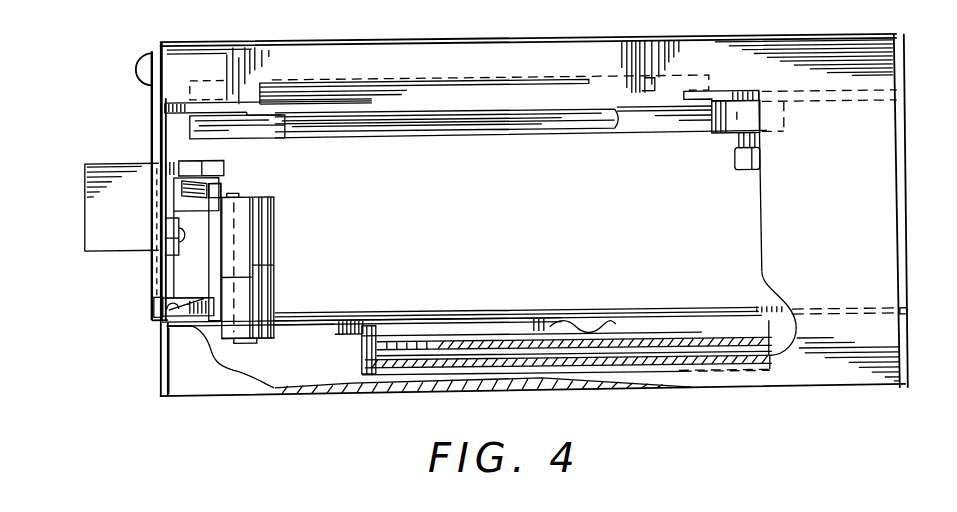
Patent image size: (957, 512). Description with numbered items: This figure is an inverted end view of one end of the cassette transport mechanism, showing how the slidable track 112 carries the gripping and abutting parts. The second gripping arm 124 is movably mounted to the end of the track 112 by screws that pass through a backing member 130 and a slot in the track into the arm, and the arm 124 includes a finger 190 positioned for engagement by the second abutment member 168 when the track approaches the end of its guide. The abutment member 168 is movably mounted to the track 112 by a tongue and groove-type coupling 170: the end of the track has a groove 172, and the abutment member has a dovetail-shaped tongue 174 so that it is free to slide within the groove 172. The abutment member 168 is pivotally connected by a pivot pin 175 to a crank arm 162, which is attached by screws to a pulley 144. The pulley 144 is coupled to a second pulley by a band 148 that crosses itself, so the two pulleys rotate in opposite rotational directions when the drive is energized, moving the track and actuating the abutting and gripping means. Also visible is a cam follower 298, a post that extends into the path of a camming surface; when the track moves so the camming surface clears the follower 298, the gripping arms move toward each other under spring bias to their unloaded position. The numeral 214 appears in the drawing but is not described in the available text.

The slidable track 112 is at (160, 313).
The second gripping arm 124 is at (83, 233).
The backing member 130 is at (160, 258).
The pulley 144 is at (483, 342).
The band 148 is at (362, 366).
The crank arm 162 is at (398, 332).
The second abutment member 168 is at (220, 190).
The tongue and groove-type coupling 170 is at (184, 337).
The groove 172 is at (157, 217).
The dovetail-shaped tongue 174 is at (178, 170).
The pivot pin 175 is at (282, 258).
The finger 190 is at (273, 282).
The post 214 is at (224, 168).
The cam follower 298 is at (730, 170).